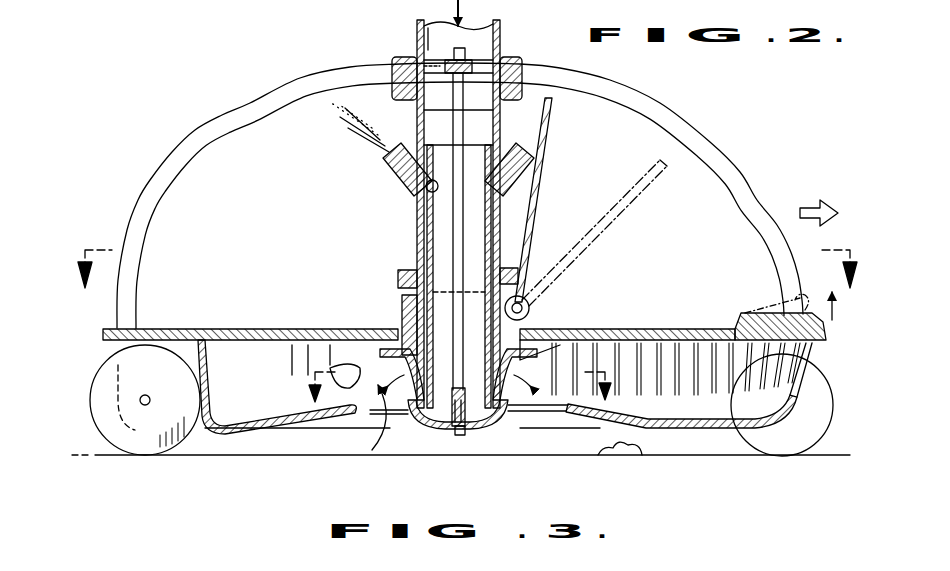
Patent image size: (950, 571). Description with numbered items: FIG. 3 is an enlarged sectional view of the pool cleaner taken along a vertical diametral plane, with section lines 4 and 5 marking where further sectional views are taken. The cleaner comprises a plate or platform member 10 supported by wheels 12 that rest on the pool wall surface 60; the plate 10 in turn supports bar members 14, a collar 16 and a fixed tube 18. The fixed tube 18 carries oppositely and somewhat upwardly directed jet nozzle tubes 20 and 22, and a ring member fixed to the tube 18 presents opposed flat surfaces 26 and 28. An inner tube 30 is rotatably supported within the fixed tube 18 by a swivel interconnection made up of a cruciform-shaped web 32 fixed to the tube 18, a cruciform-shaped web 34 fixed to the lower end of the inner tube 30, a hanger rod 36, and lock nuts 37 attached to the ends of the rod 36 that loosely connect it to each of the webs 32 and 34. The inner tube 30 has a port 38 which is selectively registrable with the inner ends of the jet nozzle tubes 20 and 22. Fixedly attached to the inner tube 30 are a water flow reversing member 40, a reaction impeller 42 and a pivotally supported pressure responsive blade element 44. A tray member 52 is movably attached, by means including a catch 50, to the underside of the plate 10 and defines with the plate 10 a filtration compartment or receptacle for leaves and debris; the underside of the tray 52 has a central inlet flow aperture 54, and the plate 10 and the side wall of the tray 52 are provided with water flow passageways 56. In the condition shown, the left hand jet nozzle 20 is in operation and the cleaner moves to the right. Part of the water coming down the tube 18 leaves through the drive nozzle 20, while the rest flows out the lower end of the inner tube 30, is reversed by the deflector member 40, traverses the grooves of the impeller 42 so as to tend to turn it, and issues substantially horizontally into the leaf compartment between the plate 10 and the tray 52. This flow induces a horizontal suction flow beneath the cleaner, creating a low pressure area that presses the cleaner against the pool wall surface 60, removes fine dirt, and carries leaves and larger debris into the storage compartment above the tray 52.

The plate or platform member 10 is at (200, 330).
The wheels 12 is at (140, 450).
The bar members 14 is at (193, 136).
The collar 16 is at (512, 58).
The fixed tube 18 is at (496, 36).
The jet nozzle tube 20 is at (402, 170).
The jet nozzle tube 22 is at (508, 182).
The flat surface 26 is at (398, 280).
The flat surface 28 is at (528, 298).
The inner tube 30 is at (416, 252).
The cruciform-shaped web 32 is at (410, 58).
The cruciform-shaped web 34 is at (477, 412).
The hanger rod 36 is at (462, 130).
The lock nuts 37 is at (466, 52).
The port 38 is at (416, 209).
The water flow reversing member 40 is at (434, 424).
The reaction impeller 42 is at (534, 388).
The pressure responsive blade element 44 is at (558, 130).
The catch 50 is at (818, 322).
The tray member 52 is at (692, 430).
The central inlet flow aperture 54 is at (352, 425).
The water flow passageways 56 is at (568, 338).
The pool wall surface 60 is at (238, 448).
The section line 4 is at (465, 260).
The section line 5 is at (461, 388).